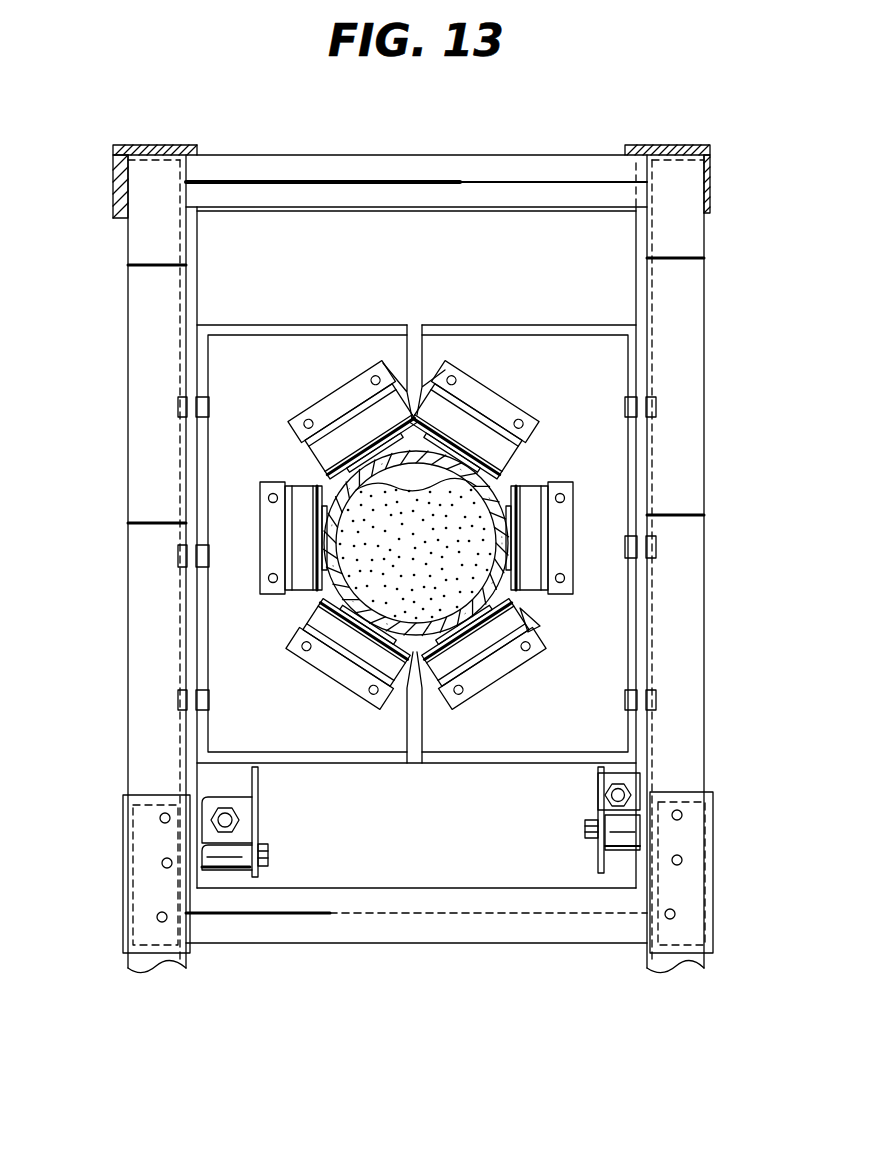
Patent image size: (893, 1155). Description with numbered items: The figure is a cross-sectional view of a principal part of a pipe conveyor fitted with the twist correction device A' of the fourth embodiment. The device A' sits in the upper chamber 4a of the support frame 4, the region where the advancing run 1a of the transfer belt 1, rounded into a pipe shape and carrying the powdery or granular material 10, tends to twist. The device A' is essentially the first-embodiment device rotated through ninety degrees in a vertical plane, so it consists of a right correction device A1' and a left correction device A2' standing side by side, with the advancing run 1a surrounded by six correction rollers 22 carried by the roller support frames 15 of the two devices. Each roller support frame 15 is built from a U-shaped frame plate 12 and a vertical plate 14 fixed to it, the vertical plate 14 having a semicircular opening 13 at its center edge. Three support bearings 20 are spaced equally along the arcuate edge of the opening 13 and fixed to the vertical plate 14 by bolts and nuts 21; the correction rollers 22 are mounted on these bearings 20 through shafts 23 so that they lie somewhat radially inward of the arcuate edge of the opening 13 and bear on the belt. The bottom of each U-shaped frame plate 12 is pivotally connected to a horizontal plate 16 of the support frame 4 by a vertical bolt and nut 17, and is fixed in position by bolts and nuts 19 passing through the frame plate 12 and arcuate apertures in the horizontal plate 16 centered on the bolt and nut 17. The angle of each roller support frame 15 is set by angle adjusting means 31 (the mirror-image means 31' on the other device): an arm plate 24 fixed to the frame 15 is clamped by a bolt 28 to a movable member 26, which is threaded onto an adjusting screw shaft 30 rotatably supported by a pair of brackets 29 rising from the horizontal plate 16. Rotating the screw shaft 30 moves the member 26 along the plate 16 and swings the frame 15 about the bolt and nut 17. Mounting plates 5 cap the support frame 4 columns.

The transfer belt 1 is at (38, 590).
The advancing run 1a is at (416, 543).
The support frame 4 is at (708, 286).
The upper chamber 4a is at (612, 244).
The mounting plate 5 is at (118, 192).
The powdery or granular material 10 is at (327, 532).
The U-shaped frame plate 12 is at (386, 324).
The semicircular opening 13 is at (536, 620).
The vertical plate 14 is at (300, 764).
The roller support frame 15 is at (405, 765).
The horizontal plate 16 is at (198, 250).
The vertical bolt and nut 17 is at (183, 562).
The bolts and nuts 19 is at (180, 407).
The support bearings 20 is at (320, 405).
The bolts and nuts 21 is at (393, 366).
The correction rollers 22 is at (364, 428).
The shafts 23 is at (310, 477).
The arm plate 24 is at (256, 878).
The movable member 26 is at (228, 872).
The bolt 28 is at (268, 855).
The brackets 29 is at (217, 793).
The adjusting screw shaft 30 is at (240, 815).
The angle adjusting means 31 is at (710, 872).
The left bracket 31' is at (120, 874).
The twist correction device A' is at (704, 464).
The right correction device A1' is at (529, 273).
The left correction device A2' is at (302, 273).